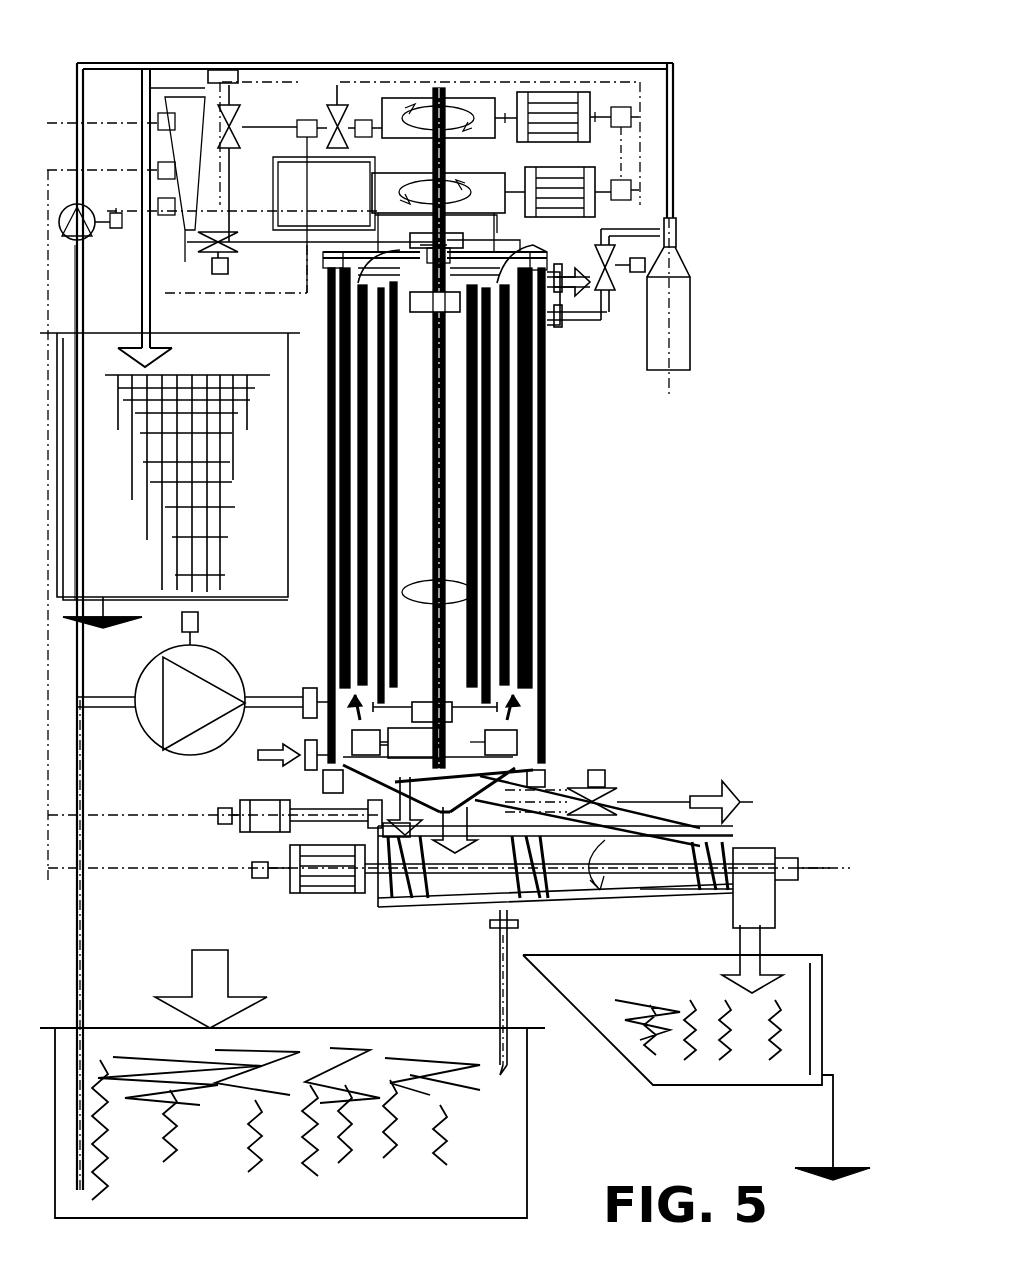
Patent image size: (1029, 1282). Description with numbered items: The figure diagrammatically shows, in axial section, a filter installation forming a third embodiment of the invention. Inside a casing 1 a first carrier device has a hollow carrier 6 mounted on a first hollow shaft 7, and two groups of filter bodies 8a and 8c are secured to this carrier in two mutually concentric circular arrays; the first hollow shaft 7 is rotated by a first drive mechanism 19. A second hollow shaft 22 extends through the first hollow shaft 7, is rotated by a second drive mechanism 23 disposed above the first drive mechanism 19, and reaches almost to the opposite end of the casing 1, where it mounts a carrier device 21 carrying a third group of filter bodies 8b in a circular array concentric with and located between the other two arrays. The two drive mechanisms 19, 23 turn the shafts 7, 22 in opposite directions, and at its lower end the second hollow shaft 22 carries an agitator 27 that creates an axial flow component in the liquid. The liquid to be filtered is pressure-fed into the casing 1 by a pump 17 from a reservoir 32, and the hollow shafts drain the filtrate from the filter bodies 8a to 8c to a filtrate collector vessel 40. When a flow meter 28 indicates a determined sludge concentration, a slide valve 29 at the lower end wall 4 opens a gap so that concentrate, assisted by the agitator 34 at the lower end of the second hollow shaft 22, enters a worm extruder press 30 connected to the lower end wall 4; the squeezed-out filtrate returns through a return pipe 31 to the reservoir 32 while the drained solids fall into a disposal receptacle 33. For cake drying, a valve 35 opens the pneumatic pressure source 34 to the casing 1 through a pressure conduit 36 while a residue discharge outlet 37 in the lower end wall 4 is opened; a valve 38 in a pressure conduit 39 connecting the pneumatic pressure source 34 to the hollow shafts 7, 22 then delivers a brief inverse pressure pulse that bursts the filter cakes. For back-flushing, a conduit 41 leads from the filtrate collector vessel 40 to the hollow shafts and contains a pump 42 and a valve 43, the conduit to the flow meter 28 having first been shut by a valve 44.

The casing 1 is at (600, 505).
The lower end wall 4 is at (323, 790).
The hollow carrier 6 is at (500, 262).
The first hollow shaft 7 is at (465, 250).
The filter bodies 8a is at (475, 548).
The filter bodies 8b is at (487, 633).
The filter bodies 8c is at (505, 585).
The pump 17 is at (230, 655).
The first drive mechanism 19 is at (405, 100).
The carrier device 21 is at (455, 705).
The second hollow shaft 22 is at (443, 488).
The second drive mechanism 23 is at (475, 118).
The agitator 27 is at (520, 732).
The flow meter 28 is at (170, 95).
The slide valve 29 is at (255, 785).
The worm extruder press 30 is at (463, 915).
The return pipe 31 is at (640, 893).
The reservoir 32 is at (338, 1028).
The disposal receptacle 33 is at (708, 1062).
The pneumatic pressure source 34 is at (690, 340).
The valve 35 is at (618, 292).
The pressure conduit 36 is at (565, 330).
The residue discharge outlet 37 is at (655, 870).
The valve 38 is at (335, 103).
The pressure conduit 39 is at (672, 118).
The filtrate collector vessel 40 is at (240, 345).
The conduit 41 is at (86, 300).
The pump 42 is at (85, 236).
The valve 43 is at (250, 110).
The valve 44 is at (205, 262).